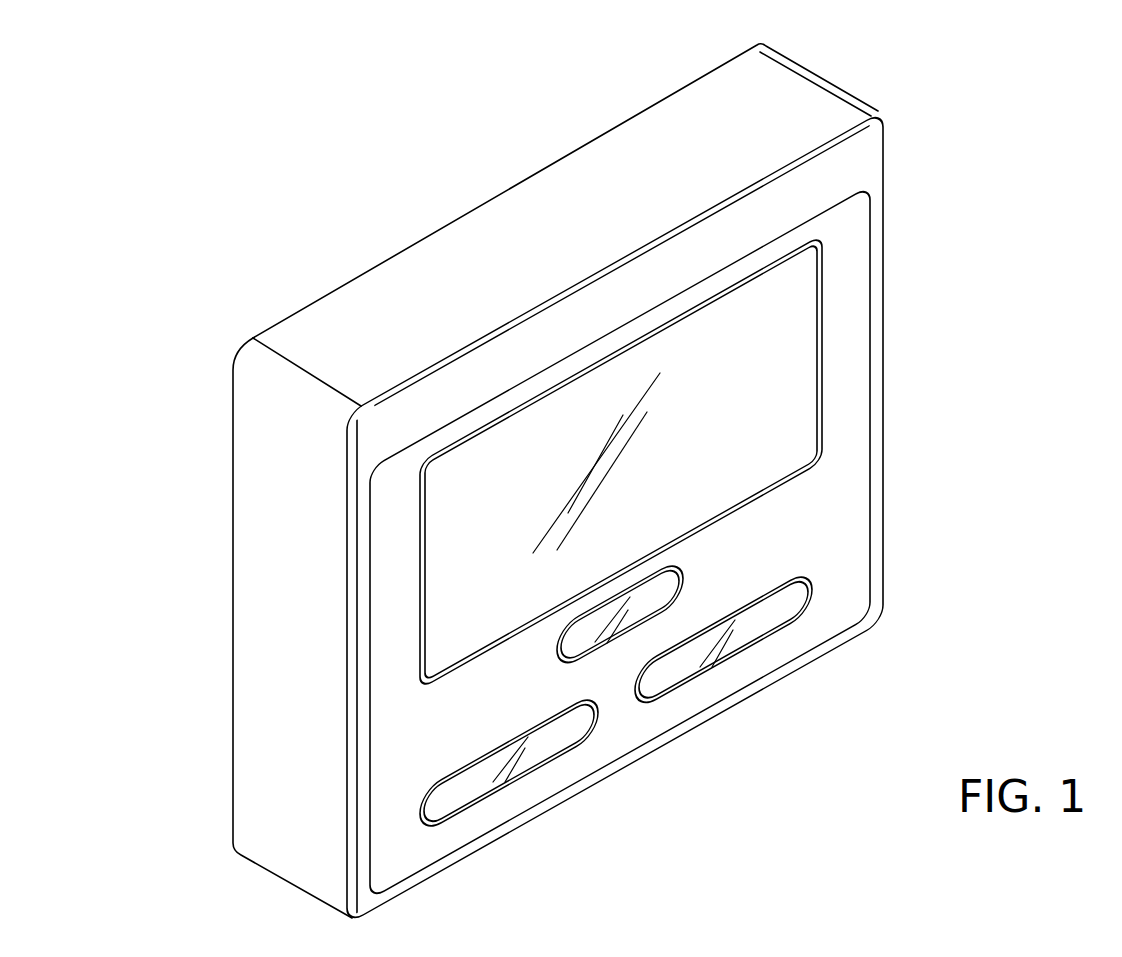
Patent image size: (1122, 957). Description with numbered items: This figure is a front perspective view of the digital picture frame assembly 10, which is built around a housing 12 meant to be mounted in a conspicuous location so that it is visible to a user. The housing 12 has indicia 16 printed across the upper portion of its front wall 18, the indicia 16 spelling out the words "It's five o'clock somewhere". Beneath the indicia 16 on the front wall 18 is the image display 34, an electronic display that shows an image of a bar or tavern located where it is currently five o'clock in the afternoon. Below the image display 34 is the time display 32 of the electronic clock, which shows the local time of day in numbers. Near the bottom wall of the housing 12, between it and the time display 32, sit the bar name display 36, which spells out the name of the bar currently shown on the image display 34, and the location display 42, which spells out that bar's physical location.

The digital picture frame assembly 10 is at (612, 82).
The housing 12 is at (877, 108).
The indicia 16 is at (597, 281).
The front wall 18 is at (845, 562).
The image display 34 is at (823, 312).
The time display 32 is at (617, 645).
The bar name display 36 is at (550, 763).
The location display 42 is at (790, 617).